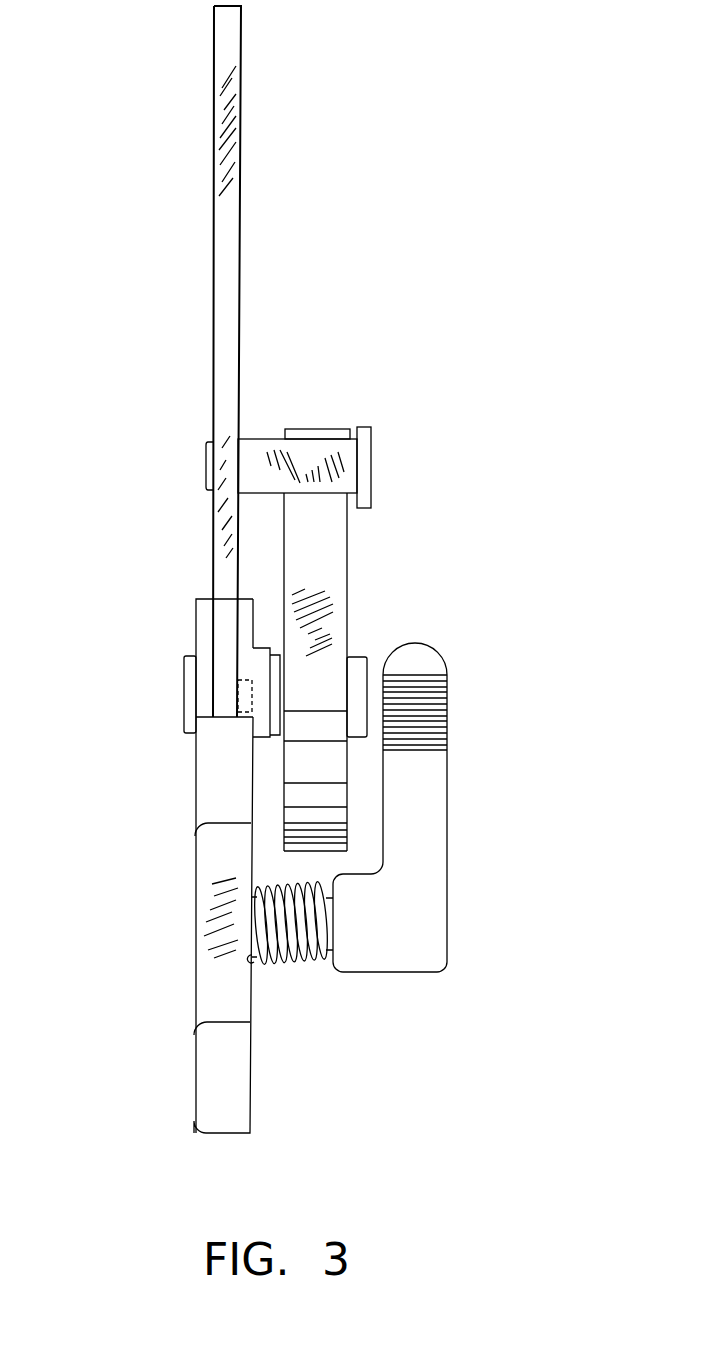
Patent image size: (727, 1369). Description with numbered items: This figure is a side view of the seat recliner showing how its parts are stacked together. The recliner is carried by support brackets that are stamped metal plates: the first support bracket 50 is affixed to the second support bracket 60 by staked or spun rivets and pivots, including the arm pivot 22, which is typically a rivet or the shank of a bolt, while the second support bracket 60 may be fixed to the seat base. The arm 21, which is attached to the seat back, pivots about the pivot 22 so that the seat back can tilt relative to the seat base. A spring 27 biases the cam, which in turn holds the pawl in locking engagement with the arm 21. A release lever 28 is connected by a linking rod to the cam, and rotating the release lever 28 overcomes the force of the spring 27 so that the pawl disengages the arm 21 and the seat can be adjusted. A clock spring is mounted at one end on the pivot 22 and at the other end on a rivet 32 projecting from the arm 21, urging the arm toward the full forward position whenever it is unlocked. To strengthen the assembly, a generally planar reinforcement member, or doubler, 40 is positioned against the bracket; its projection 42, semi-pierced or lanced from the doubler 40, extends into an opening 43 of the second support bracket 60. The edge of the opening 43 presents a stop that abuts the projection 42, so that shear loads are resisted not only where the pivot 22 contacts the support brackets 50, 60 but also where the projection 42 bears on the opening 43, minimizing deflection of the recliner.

The arm 21 is at (223, 257).
The rivet 32 is at (257, 447).
The spring 27 is at (338, 570).
The arm pivot 22 is at (365, 660).
The release lever 28 is at (435, 830).
The first support bracket 50 is at (203, 613).
The projection 42 is at (240, 695).
The opening 43 is at (240, 716).
The semi-pierced reinforcement member 40 is at (262, 738).
The second support bracket 60 is at (235, 1073).